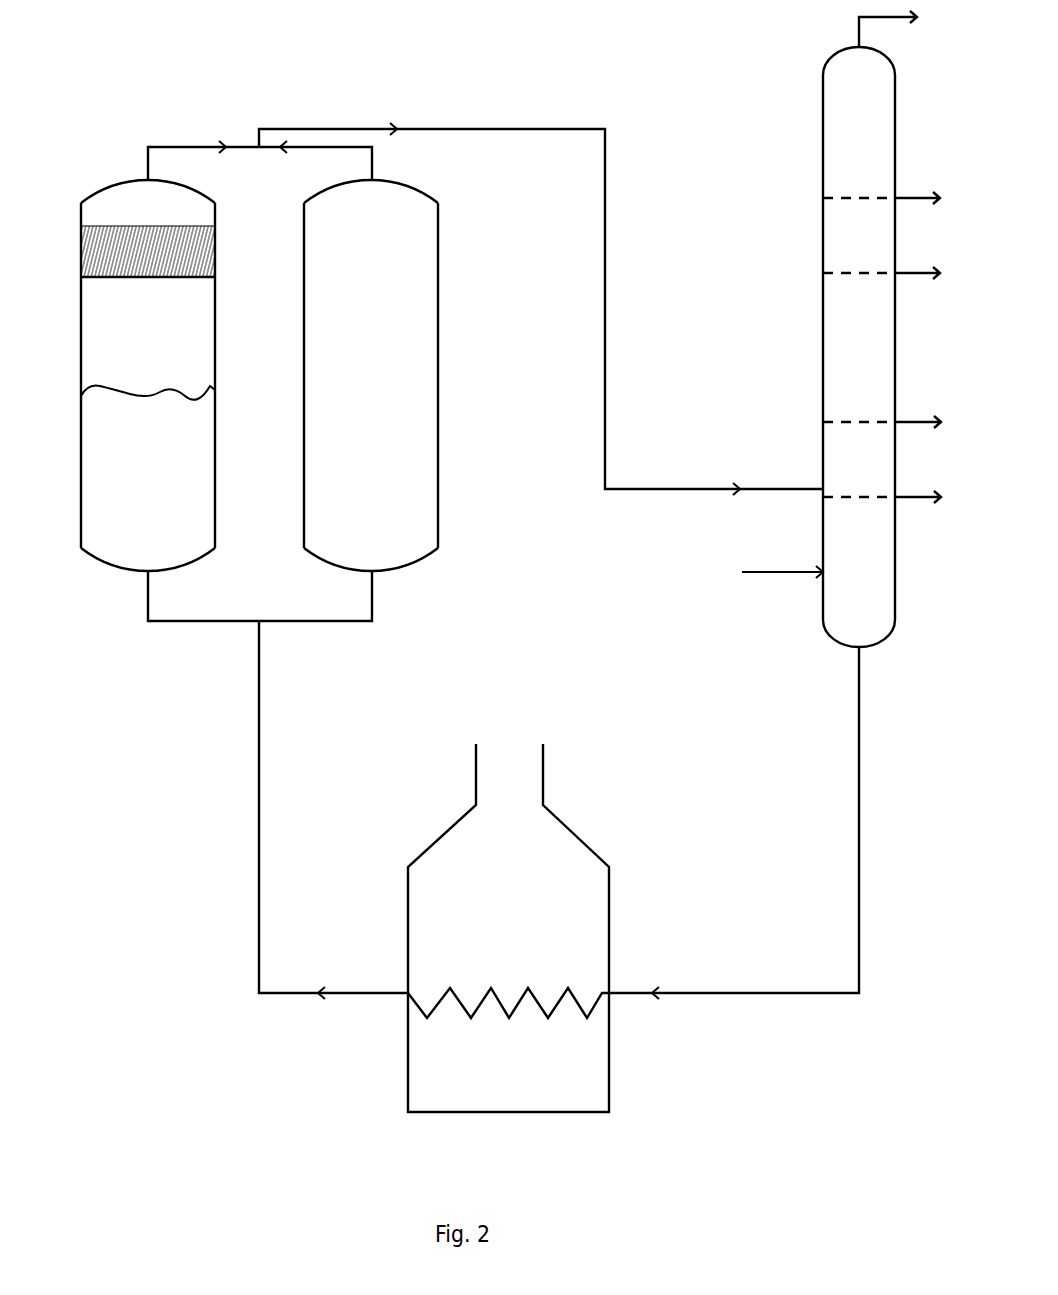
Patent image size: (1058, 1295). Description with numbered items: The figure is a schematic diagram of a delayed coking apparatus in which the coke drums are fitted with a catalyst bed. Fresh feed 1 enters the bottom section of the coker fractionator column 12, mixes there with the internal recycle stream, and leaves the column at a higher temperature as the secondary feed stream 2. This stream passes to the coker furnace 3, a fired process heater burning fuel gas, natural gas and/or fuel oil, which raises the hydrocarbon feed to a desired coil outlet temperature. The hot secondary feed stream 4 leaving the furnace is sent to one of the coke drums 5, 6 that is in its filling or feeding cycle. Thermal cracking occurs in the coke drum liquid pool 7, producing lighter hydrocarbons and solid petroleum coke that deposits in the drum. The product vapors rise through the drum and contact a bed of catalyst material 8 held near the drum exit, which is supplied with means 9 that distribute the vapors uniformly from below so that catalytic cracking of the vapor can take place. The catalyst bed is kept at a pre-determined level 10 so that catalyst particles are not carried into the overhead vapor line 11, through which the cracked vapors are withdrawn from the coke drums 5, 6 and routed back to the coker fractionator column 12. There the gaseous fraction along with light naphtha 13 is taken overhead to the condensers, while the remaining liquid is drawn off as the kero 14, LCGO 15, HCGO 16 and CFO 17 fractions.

The fresh feed 1 is at (756, 568).
The secondary feed stream 2 is at (859, 723).
The coker furnace 3 is at (452, 826).
The hot secondary feed stream 4 is at (350, 995).
The coke drum 5 is at (81, 302).
The coke drum 6 is at (304, 373).
The coke drum liquid pool 7 is at (81, 390).
The bed of catalyst material 8 is at (217, 262).
The means to distribute the product vapors 9 is at (216, 282).
The pre-determined level 10 is at (215, 225).
The overhead vapor line 11 is at (322, 128).
The coker fractionator column 12 is at (823, 110).
The gaseous fraction along with light naphtha 13 is at (900, 25).
The kero fraction 14 is at (893, 199).
The LCGO fraction 15 is at (893, 274).
The HCGO fraction 16 is at (894, 423).
The CFO fraction 17 is at (894, 498).